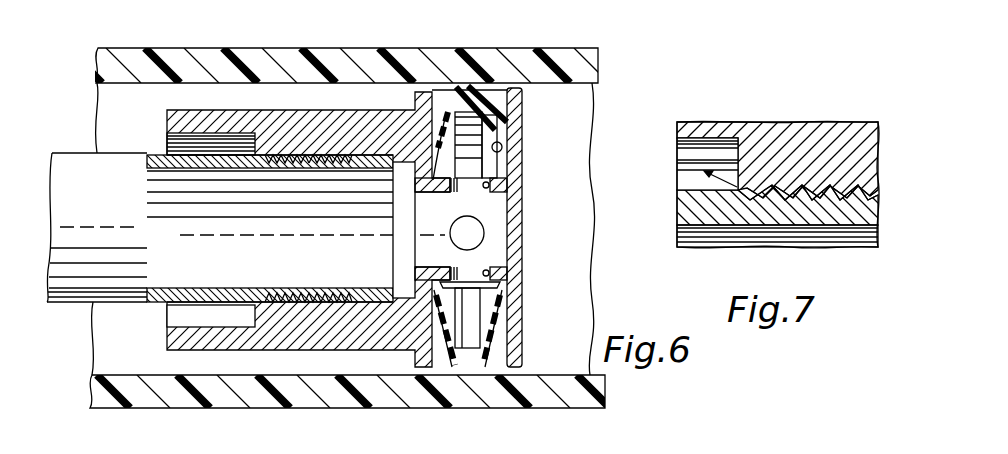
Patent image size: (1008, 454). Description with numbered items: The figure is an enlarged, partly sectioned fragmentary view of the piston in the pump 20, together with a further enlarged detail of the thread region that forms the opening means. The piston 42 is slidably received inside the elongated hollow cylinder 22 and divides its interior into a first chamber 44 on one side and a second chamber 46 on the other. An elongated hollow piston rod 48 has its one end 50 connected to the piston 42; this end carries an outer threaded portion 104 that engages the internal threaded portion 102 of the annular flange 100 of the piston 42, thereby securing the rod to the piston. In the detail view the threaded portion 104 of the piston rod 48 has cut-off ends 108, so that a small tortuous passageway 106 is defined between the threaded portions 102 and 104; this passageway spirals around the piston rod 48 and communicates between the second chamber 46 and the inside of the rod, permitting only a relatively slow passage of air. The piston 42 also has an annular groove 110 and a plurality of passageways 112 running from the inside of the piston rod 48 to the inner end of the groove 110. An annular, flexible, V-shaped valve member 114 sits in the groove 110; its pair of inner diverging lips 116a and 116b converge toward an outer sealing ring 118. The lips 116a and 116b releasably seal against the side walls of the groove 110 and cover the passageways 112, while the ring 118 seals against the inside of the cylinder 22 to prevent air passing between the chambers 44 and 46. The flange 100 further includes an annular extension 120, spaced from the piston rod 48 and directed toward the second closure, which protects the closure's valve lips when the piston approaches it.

In FIG. 6, the pump 20 is at (122, 46).
In FIG. 6, the cylinder 22 is at (161, 47).
In FIG. 6, the piston 42 is at (227, 108).
In FIG. 7, the piston 42 is at (747, 116).
In FIG. 6, the first chamber 44 is at (576, 329).
In FIG. 6, the second chamber 46 is at (150, 119).
In FIG. 6, the piston rod 48 is at (66, 152).
In FIG. 7, the piston rod 48 is at (677, 207).
In FIG. 6, the one end of piston rod 50 is at (210, 287).
In FIG. 6, the annular flange 100 is at (363, 110).
In FIG. 7, the annular flange 100 is at (863, 127).
In FIG. 6, the internal threaded portion 102 is at (302, 152).
In FIG. 7, the internal threaded portion 102 is at (815, 197).
In FIG. 6, the outer threaded portion 104 is at (275, 152).
In FIG. 7, the outer threaded portion 104 is at (830, 200).
In FIG. 6, the tortuous passageway 106 is at (362, 290).
In FIG. 7, the tortuous passageway 106 is at (853, 175).
In FIG. 7, the cut-off ends 108 is at (782, 193).
In FIG. 6, the annular groove 110 is at (494, 292).
In FIG. 6, the passageways 112 is at (486, 188).
In FIG. 6, the valve member 114 is at (487, 95).
In FIG. 6, the inner lip 116a is at (443, 117).
In FIG. 6, the inner lip 116b is at (497, 142).
In FIG. 6, the outer sealing ring 118 is at (478, 88).
In FIG. 6, the annular extension 120 is at (204, 110).